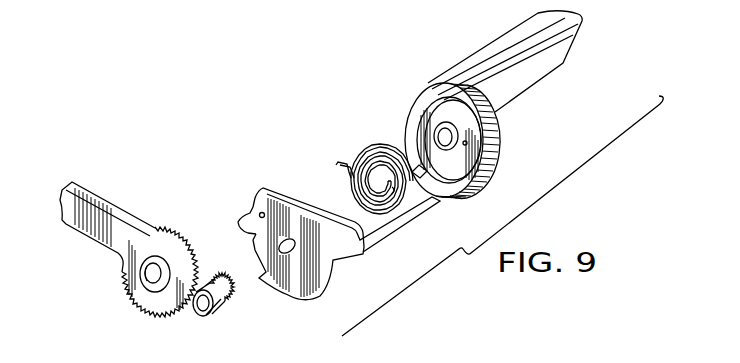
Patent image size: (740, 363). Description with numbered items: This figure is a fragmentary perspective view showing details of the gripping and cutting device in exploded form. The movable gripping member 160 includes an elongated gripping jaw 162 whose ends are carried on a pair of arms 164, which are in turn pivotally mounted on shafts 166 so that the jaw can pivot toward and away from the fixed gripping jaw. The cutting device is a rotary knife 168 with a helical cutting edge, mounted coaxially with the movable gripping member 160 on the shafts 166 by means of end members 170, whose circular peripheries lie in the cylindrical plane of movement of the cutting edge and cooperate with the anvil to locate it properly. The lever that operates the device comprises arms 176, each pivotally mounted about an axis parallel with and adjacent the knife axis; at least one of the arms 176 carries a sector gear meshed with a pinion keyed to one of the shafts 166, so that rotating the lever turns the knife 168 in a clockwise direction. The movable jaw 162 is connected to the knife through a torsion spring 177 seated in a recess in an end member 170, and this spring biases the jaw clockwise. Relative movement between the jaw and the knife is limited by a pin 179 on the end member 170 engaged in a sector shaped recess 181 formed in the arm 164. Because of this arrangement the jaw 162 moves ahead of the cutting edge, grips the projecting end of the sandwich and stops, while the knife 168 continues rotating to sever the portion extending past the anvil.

The movable gripping member 160 is at (347, 268).
The elongated gripping jaw 162 is at (387, 240).
The arms 164 is at (327, 230).
The shafts 166 is at (217, 277).
The rotary knife 168 is at (532, 35).
The end members 170 is at (502, 145).
The arms 176 is at (110, 205).
The torsion spring 177 is at (365, 143).
The pin 179 is at (438, 195).
The sector shaped recess 181 is at (245, 218).